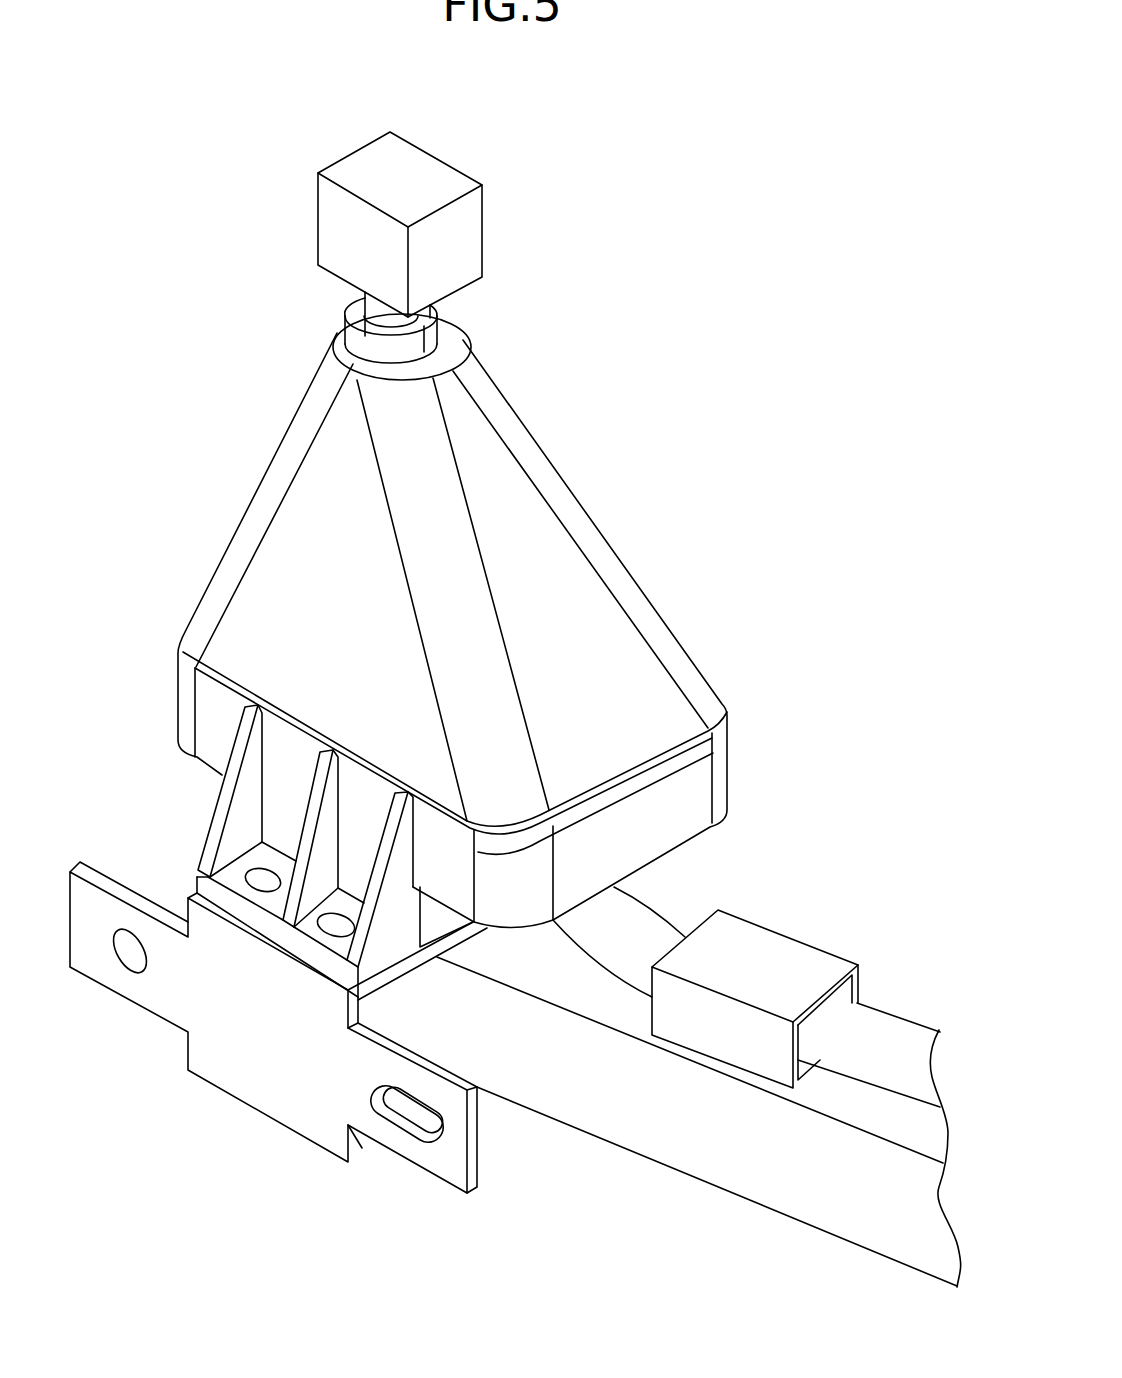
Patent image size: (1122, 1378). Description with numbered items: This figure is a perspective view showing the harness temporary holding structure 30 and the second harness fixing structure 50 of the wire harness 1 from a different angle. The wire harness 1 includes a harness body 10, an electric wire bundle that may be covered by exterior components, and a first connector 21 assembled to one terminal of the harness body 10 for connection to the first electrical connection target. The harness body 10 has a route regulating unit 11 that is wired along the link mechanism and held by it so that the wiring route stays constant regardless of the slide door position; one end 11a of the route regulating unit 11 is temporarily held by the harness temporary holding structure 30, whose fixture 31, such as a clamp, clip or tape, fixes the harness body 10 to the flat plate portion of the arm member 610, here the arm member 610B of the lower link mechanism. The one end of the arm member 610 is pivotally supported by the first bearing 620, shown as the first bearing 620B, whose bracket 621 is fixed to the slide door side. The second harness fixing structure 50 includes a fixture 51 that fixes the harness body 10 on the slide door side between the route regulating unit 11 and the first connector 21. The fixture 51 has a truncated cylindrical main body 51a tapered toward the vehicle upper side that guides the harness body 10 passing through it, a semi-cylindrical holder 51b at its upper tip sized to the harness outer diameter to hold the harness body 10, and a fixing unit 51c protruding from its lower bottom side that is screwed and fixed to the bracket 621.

The wire harness 1 is at (723, 131).
The first connector 21 is at (414, 172).
The fixture 51 is at (589, 383).
The second harness fixing structure 50 is at (404, 642).
The main body 51a is at (545, 557).
The holder 51b is at (363, 348).
The fixing unit 51c is at (233, 873).
The fixture 31 is at (780, 950).
The harness temporary holding structure 30 is at (755, 953).
The end 11a is at (877, 1024).
The route regulating unit 11 is at (869, 1015).
The harness body 10 is at (925, 985).
The arm member 610B is at (704, 1233).
The arm member 610 is at (654, 1130).
The first bearing 620B is at (147, 1057).
The first bearing 620 is at (258, 1029).
The bracket 621 is at (260, 1067).